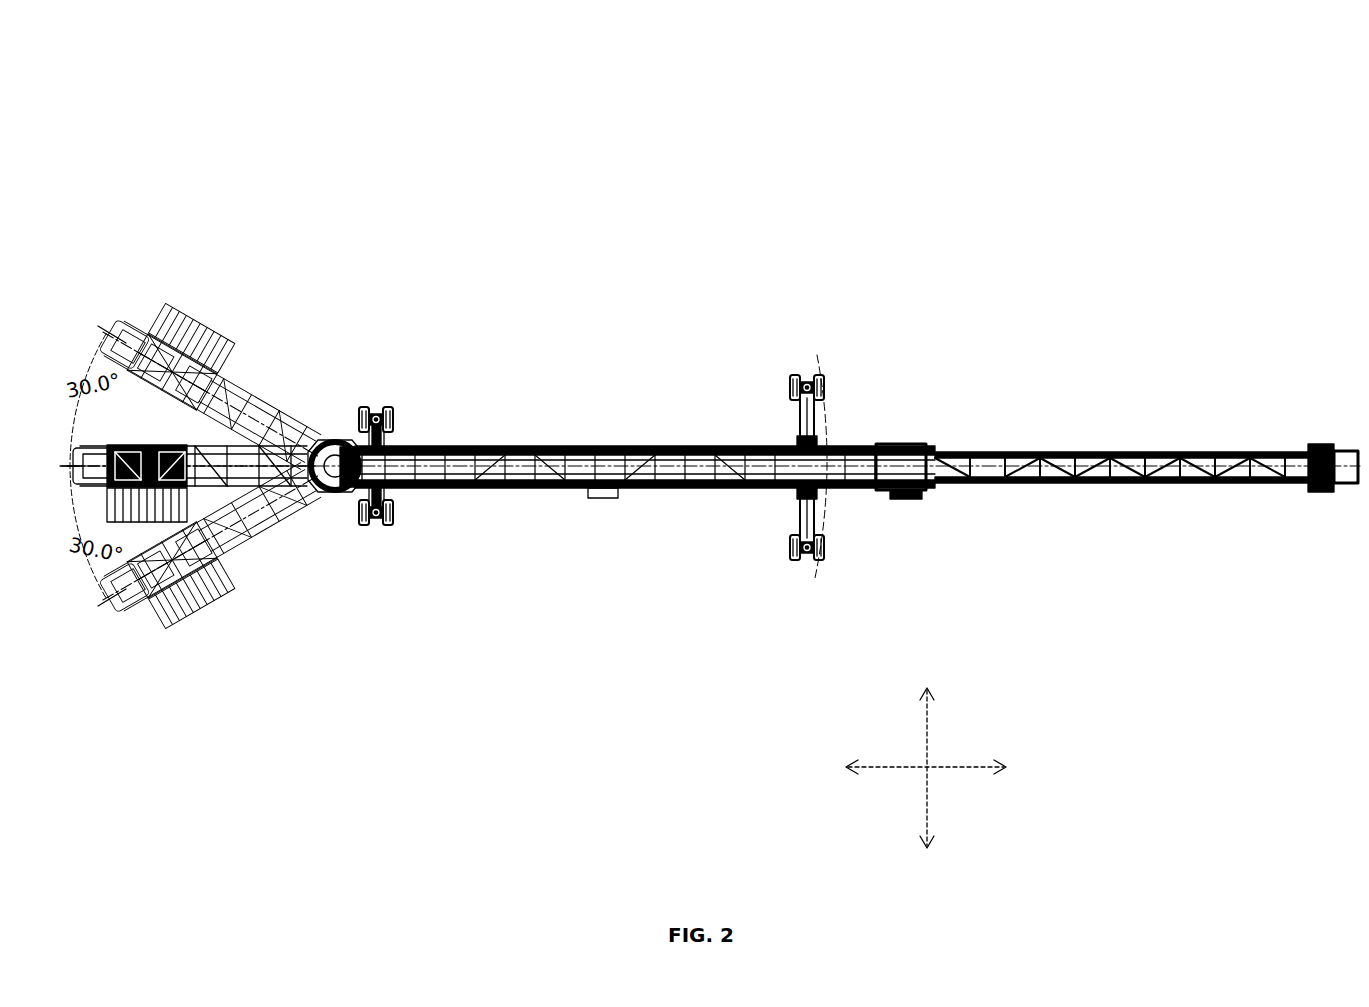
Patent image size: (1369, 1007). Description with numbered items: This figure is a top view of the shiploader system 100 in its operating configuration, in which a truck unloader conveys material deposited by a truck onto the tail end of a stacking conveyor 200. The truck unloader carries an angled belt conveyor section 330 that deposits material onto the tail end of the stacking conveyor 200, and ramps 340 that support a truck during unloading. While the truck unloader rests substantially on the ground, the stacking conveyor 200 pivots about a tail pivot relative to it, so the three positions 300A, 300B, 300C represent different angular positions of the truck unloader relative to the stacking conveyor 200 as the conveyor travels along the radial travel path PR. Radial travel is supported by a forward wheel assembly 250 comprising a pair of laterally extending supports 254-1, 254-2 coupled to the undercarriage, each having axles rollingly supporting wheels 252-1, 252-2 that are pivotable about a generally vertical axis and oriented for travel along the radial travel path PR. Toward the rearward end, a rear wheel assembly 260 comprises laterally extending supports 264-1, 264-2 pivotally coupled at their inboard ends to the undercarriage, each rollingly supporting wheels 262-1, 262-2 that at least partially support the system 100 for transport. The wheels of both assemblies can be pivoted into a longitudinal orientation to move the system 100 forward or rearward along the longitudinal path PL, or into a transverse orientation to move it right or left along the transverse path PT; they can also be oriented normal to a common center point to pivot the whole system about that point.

The shiploader system 100 is at (658, 94).
The stacking conveyor 200 is at (980, 255).
The forward wheel assembly 250 is at (717, 417).
The wheel 252-1 is at (790, 386).
The wheel 252-2 is at (790, 548).
The laterally extending support 254-1 is at (796, 440).
The laterally extending support 254-2 is at (796, 498).
The rear wheel assembly 260 is at (434, 440).
The wheel 262-1 is at (393, 418).
The wheel 262-2 is at (393, 524).
The laterally extending support 264-1 is at (382, 440).
The laterally extending support 264-2 is at (384, 496).
The position of truck unloader 300A is at (125, 326).
The position of truck unloader 300B is at (221, 448).
The position of truck unloader 300C is at (132, 612).
The angled belt conveyor section 330 is at (241, 515).
The ramp 340 is at (221, 565).
The radial travel path PR is at (835, 522).
The longitudinal path PL is at (935, 755).
The transverse path PT is at (936, 778).